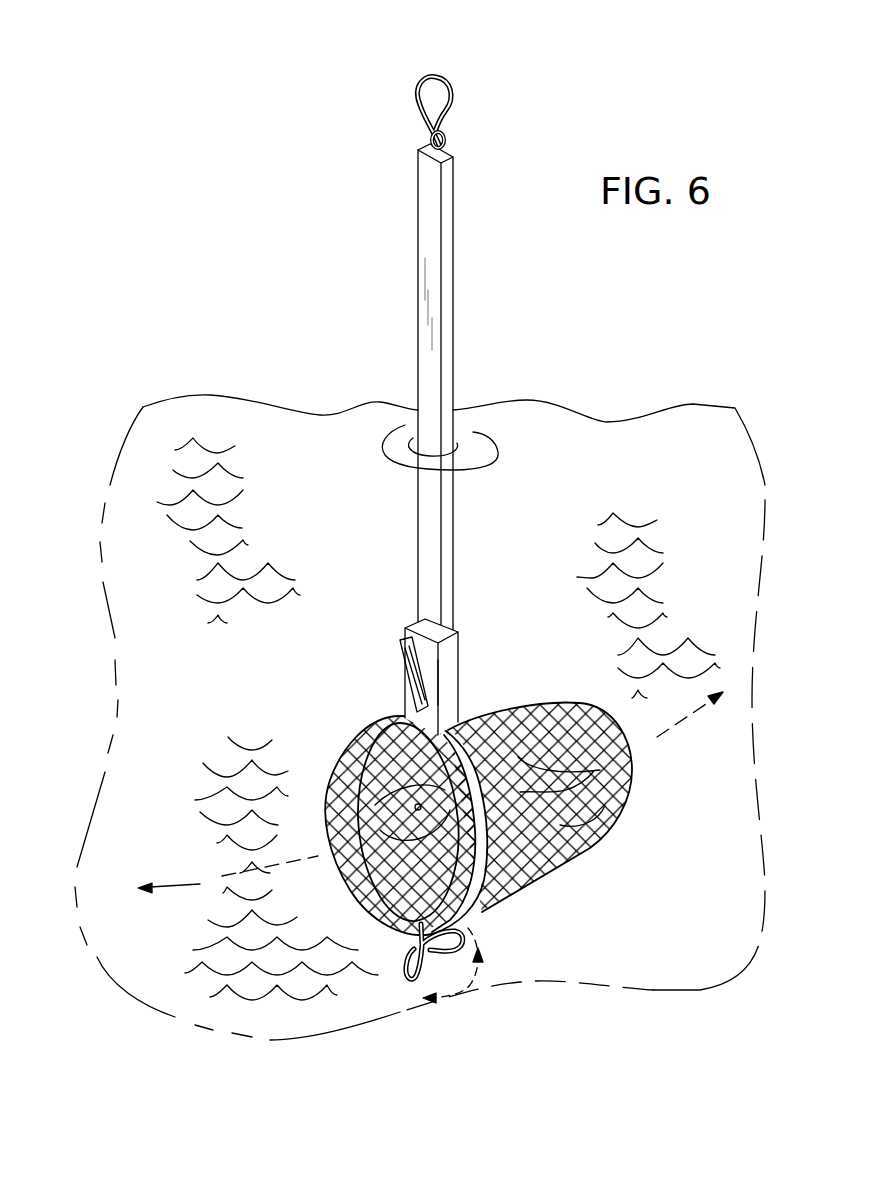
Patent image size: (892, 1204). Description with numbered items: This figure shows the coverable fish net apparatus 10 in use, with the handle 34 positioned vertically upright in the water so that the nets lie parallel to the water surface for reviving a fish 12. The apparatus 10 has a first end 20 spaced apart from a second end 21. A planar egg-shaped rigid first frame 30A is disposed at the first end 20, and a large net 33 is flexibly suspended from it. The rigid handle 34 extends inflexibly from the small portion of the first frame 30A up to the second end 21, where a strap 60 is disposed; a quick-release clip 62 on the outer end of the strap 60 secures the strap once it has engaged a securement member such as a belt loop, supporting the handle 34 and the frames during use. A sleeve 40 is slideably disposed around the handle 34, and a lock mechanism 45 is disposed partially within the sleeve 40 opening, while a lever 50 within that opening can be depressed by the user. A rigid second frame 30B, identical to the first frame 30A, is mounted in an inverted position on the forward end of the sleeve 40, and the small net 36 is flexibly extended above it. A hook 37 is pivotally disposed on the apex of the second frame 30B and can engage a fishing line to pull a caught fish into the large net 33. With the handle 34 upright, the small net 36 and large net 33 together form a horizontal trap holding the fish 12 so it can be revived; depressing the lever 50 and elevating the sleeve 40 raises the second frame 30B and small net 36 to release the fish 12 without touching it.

The coverable fish net apparatus 10 is at (491, 809).
The fish 12 is at (592, 835).
The first end 20 is at (480, 928).
The second end 21 is at (428, 81).
The first frame 30A is at (495, 867).
The second frame 30B is at (482, 883).
The large net 33 is at (575, 713).
The handle 34 is at (455, 552).
The small net 36 is at (347, 763).
The hook 37 is at (413, 980).
The sleeve 40 is at (456, 669).
The lock mechanism 45 is at (448, 682).
The lever 50 is at (410, 683).
The strap 60 is at (419, 102).
The quick-release clip 62 is at (444, 134).